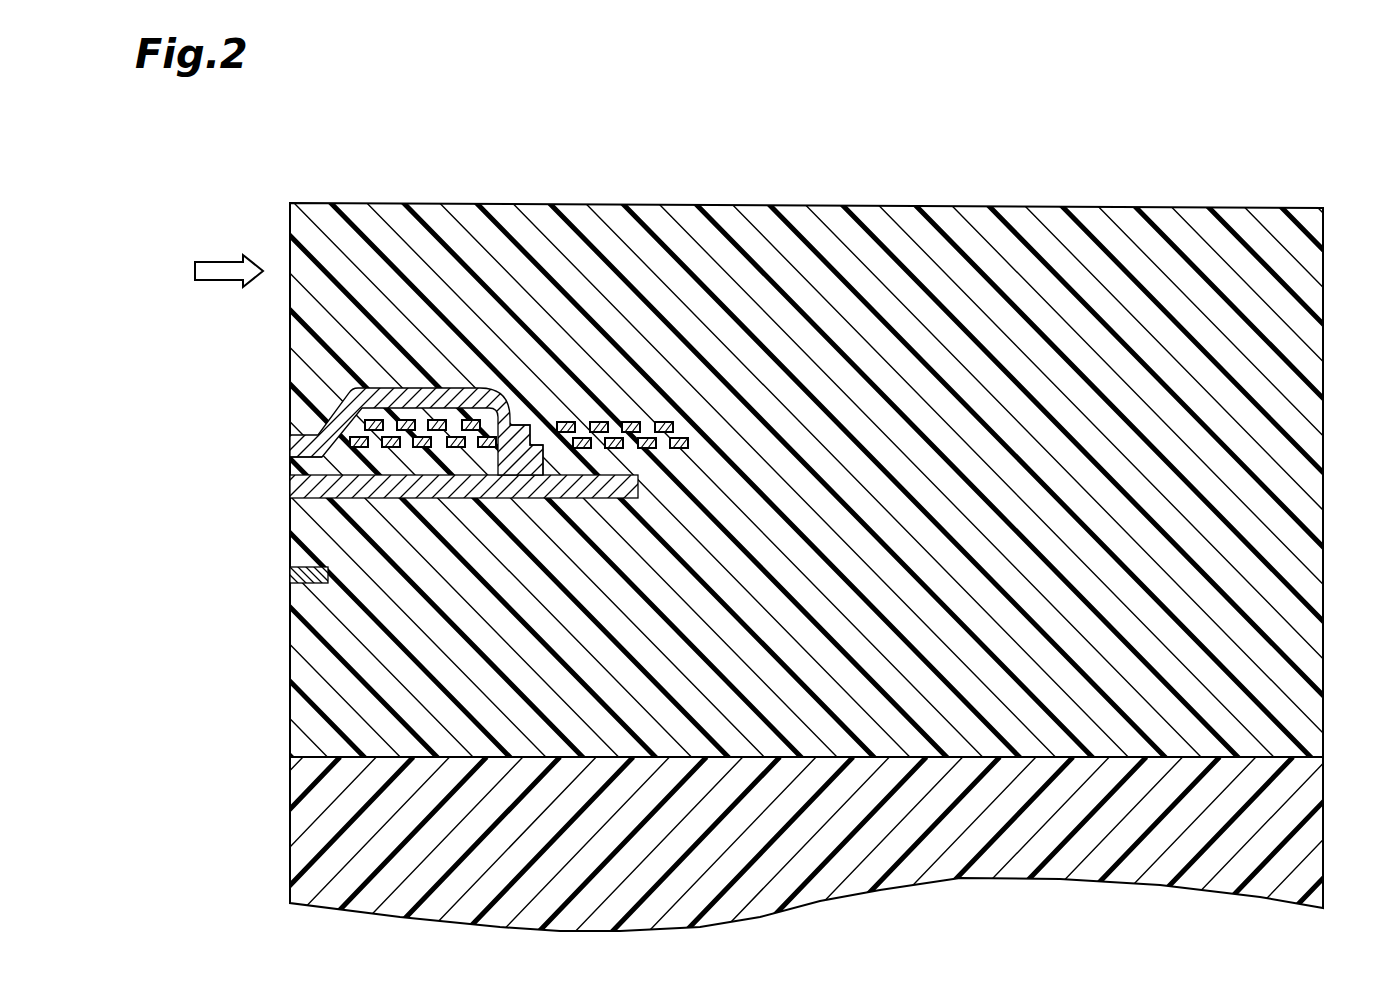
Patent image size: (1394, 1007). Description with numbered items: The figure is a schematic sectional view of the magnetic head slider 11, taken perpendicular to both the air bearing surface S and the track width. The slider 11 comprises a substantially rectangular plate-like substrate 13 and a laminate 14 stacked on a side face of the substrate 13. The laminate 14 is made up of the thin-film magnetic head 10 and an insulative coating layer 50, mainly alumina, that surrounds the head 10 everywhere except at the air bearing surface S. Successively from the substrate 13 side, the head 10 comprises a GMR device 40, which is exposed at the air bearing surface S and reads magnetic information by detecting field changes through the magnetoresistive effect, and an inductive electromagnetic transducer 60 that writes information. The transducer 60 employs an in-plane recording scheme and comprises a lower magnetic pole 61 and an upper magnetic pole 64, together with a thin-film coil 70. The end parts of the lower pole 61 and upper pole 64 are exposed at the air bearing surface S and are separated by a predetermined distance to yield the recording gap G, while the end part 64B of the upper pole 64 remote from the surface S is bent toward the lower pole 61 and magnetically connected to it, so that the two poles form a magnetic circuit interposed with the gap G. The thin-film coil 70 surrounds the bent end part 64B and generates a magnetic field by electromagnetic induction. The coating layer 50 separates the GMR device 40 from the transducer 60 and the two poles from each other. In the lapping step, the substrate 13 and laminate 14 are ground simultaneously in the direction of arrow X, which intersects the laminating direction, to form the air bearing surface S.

The magnetic head slider 11 is at (186, 176).
The thin-film magnetic head 10 is at (371, 464).
The substrate 13 is at (300, 820).
The laminate 14 is at (1323, 484).
The GMR device 40 is at (305, 566).
The coating layer 50 is at (460, 213).
The electromagnetic transducer 60 is at (398, 421).
The lower magnetic pole 61 is at (290, 486).
The upper magnetic pole 64 is at (340, 388).
The end part of the upper magnetic pole 64B is at (513, 418).
The thin-film coil 70 is at (373, 418).
The air bearing surface S is at (288, 218).
The recording gap G is at (290, 464).
The arrow X is at (229, 258).